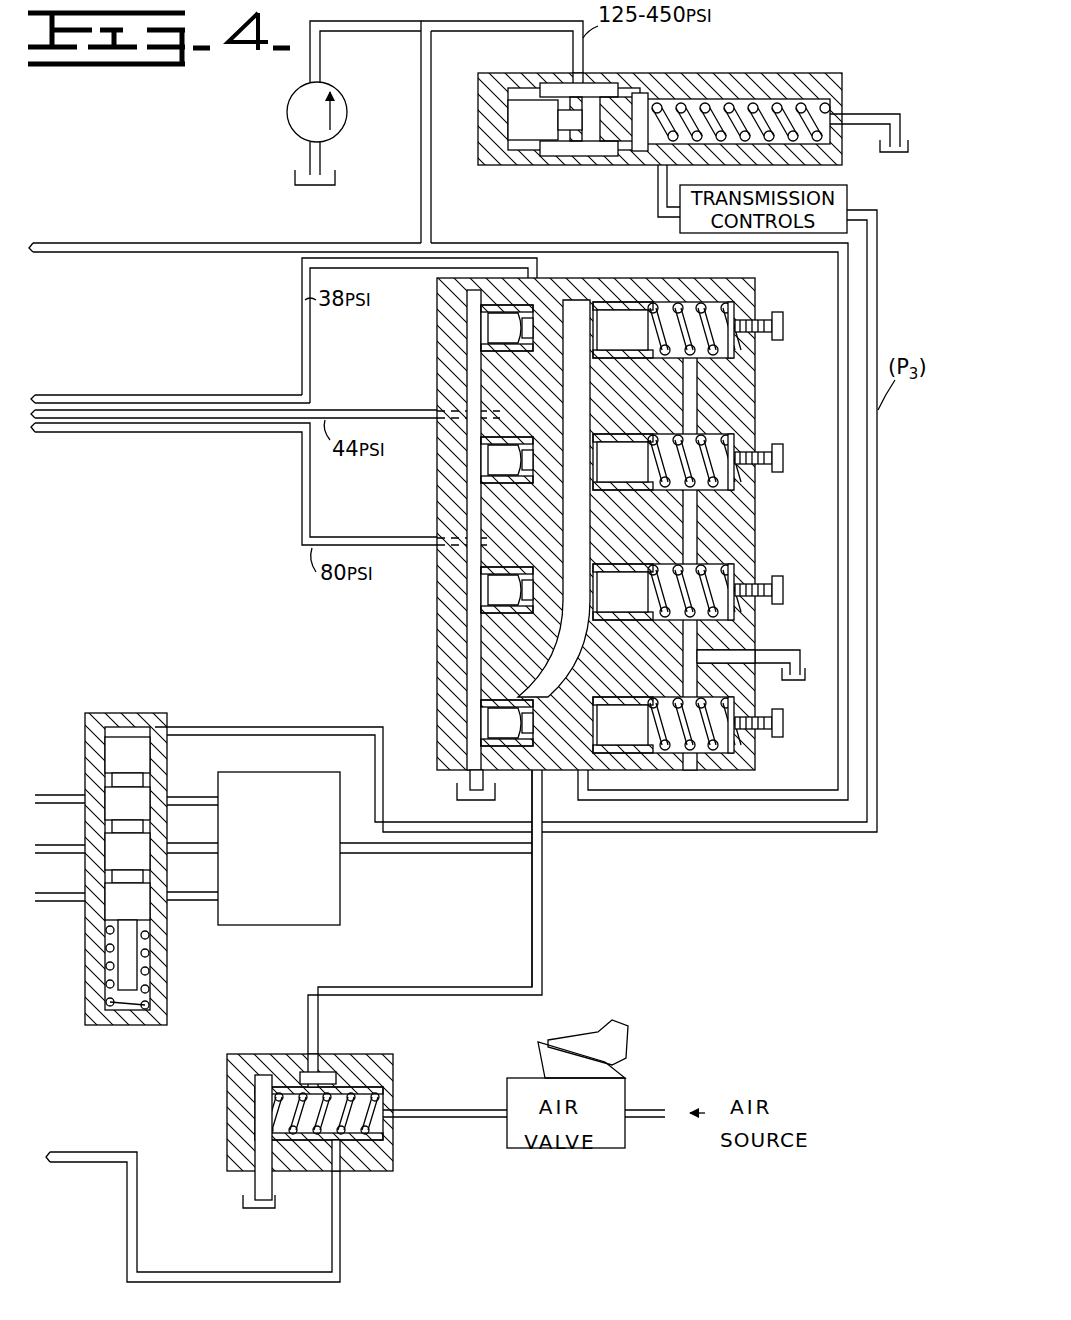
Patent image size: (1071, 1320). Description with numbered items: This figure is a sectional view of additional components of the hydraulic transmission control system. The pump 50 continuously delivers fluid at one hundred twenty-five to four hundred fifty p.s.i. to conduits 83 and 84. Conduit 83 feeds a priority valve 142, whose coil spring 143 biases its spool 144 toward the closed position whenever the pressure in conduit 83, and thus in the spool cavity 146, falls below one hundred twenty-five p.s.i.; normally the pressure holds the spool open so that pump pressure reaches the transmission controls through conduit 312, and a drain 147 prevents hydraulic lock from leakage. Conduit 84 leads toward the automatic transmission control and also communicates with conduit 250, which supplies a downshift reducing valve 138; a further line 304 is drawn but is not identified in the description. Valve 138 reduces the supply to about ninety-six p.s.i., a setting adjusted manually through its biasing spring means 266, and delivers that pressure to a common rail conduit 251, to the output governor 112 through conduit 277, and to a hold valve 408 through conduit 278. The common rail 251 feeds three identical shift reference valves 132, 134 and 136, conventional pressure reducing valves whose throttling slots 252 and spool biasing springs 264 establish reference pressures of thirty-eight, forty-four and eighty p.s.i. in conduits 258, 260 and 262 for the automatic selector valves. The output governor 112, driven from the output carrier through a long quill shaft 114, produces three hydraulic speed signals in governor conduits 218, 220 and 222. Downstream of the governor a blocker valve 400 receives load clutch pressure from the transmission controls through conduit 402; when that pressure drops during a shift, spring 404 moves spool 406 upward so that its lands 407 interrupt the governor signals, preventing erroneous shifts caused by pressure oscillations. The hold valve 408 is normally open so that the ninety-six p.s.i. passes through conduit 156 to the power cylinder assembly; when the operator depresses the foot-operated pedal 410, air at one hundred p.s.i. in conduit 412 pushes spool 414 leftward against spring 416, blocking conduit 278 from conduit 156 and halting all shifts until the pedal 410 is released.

The pump 50 is at (338, 118).
The conduit 84 is at (421, 62).
The conduit 83 is at (500, 30).
The priority valve 142 is at (635, 121).
The spool 144 is at (612, 105).
The spool cavity 146 is at (528, 117).
The coil spring 143 is at (738, 100).
The drain 147 is at (862, 114).
The conduit 312 is at (660, 180).
The main pressure line 304 is at (160, 242).
The conduit 250 is at (580, 243).
The conduit 402 is at (878, 430).
The conduit 258 is at (302, 332).
The throttling slots 252 is at (455, 398).
The conduit 260 is at (337, 408).
The conduit 262 is at (270, 432).
The common rail conduit 251 is at (575, 539).
The shift reference valve 132 is at (468, 325).
The shift reference valve 134 is at (468, 460).
The shift reference valve 136 is at (468, 592).
The downshift reducing valve 138 is at (468, 722).
The valve spool biasing springs 264 is at (752, 350).
The biasing spring means 266 is at (750, 748).
The conduit 277 is at (475, 853).
The conduit 278 is at (540, 935).
The quill shaft 114 is at (290, 757).
The output governor 112 is at (326, 890).
The blocker valve 400 is at (128, 848).
The lands 407 is at (128, 810).
The spool 406 is at (137, 925).
The spring 404 is at (150, 978).
The governor conduit 222 is at (165, 796).
The governor conduit 220 is at (170, 845).
The governor conduit 218 is at (170, 893).
The hold valve 408 is at (345, 1108).
The spool 414 is at (383, 1142).
The spring 416 is at (292, 1070).
The conduit 412 is at (470, 1120).
The foot-operated pedal 410 is at (540, 1042).
The conduit 156 is at (345, 1225).